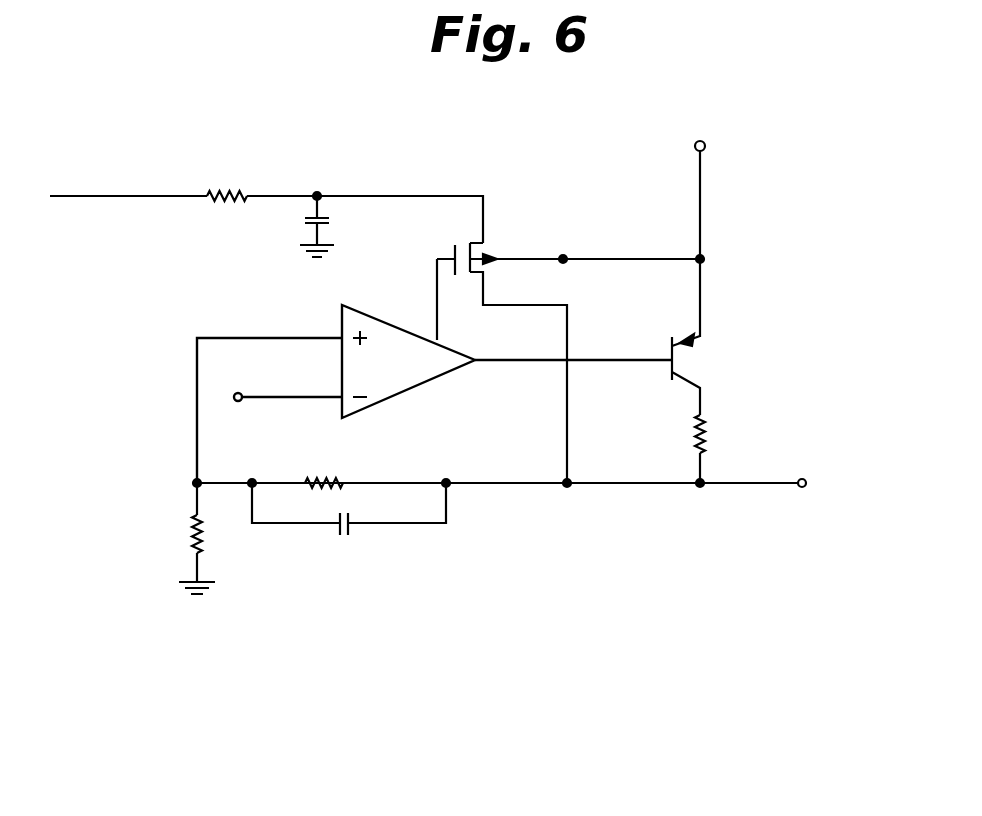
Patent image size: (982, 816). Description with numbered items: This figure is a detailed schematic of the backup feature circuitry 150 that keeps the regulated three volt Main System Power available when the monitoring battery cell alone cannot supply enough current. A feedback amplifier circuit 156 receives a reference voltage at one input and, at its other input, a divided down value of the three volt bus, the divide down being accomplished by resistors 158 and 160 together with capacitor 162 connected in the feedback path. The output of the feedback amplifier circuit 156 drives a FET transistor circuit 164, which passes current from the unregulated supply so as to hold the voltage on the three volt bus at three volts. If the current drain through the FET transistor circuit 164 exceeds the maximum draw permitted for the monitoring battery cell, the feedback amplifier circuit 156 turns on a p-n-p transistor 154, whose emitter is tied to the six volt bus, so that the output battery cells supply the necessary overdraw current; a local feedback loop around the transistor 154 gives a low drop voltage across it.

The backup feature circuitry 150 is at (793, 253).
The p-n-p transistor 154 is at (698, 358).
The feedback amplifier circuit 156 is at (424, 385).
The resistor 158 is at (338, 480).
The resistor 160 is at (188, 535).
The capacitor 162 is at (347, 537).
The FET transistor circuit 164 is at (490, 245).